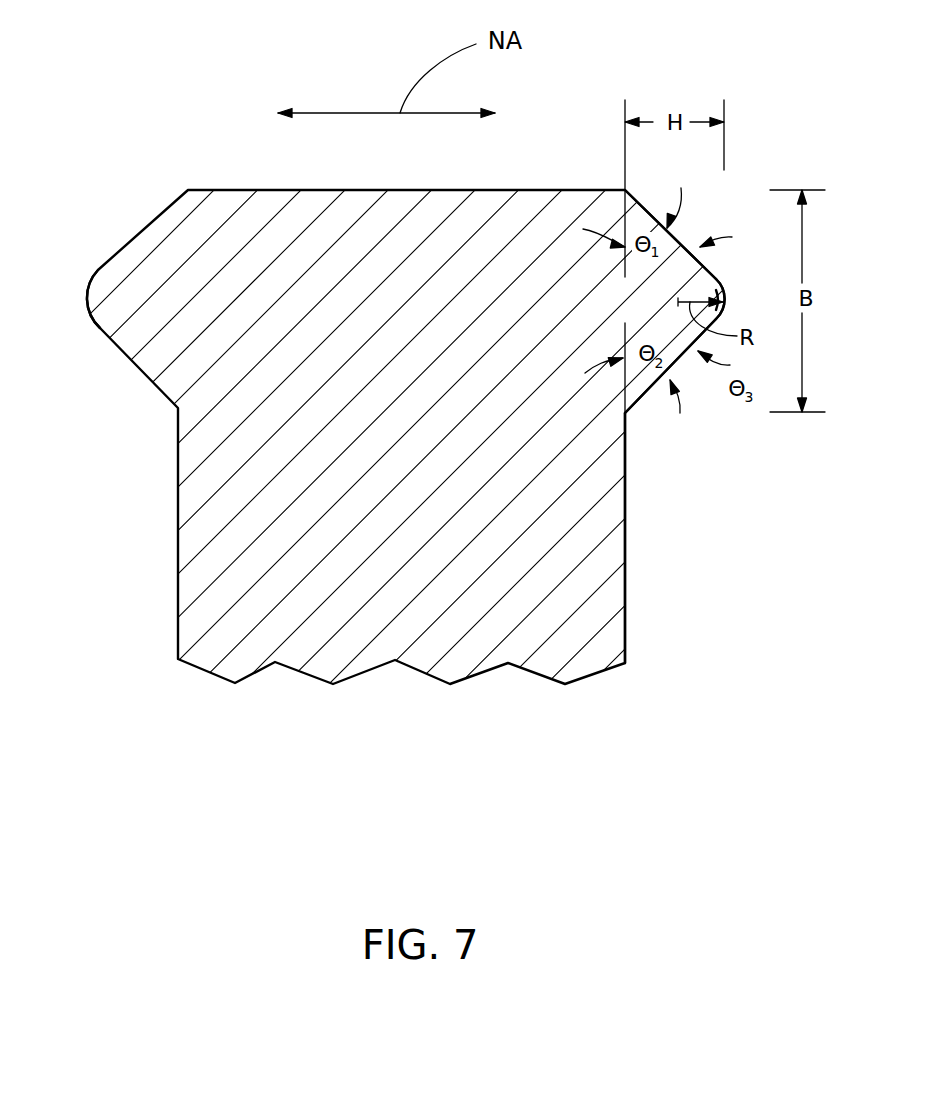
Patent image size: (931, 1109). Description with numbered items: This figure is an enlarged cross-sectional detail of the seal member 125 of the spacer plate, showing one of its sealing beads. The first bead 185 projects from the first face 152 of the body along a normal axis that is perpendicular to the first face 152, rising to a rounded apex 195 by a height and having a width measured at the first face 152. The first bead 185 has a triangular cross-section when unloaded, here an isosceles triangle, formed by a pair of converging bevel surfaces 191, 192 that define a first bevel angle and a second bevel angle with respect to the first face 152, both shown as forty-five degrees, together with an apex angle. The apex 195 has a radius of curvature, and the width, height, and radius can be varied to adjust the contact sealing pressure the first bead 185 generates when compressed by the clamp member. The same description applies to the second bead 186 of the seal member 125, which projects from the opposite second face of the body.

The seal member 125 is at (152, 110).
The second bead 186 is at (96, 271).
The first converging bevel surface 191 is at (682, 242).
The first bead 185 is at (716, 281).
The apex 195 is at (724, 300).
The second converging bevel surface 192 is at (681, 360).
The first face 152 is at (625, 370).